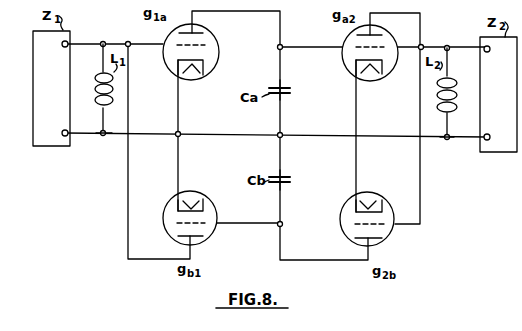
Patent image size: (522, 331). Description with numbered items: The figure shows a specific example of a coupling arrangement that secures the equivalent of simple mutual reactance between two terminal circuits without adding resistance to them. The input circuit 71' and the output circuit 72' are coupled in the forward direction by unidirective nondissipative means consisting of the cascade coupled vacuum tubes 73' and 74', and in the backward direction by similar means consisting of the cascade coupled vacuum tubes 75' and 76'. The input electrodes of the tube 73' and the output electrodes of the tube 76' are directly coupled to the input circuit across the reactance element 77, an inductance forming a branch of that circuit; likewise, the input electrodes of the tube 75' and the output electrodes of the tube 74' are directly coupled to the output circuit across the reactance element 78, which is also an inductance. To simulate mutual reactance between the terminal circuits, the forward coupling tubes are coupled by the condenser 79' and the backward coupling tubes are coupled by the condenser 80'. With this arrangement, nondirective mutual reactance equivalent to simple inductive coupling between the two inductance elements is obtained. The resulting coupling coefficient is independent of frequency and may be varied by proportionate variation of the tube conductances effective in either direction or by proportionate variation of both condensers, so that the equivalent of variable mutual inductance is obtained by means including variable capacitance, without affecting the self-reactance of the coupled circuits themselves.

The input circuit 71' is at (67, 88).
The output circuit 72' is at (485, 94).
The vacuum tube 73' is at (203, 50).
The vacuum tube 74' is at (378, 51).
The vacuum tube 75' is at (378, 219).
The vacuum tube 76' is at (203, 218).
The reactance element 77 is at (110, 118).
The reactance element 78 is at (445, 121).
The condenser 79' is at (296, 90).
The condenser 80' is at (296, 180).